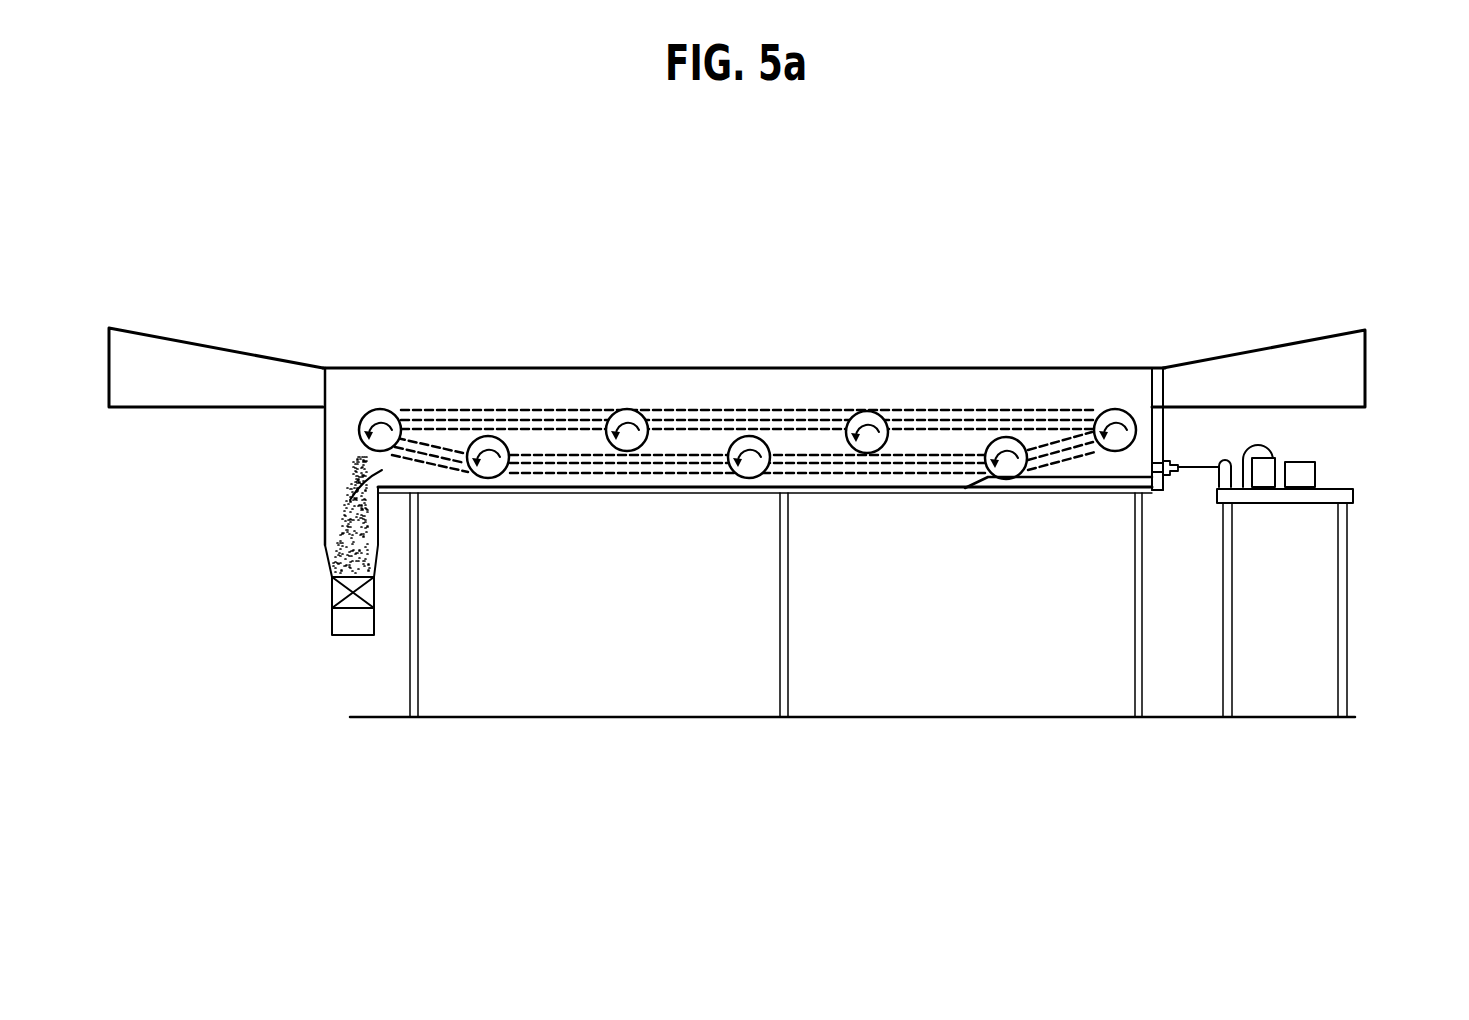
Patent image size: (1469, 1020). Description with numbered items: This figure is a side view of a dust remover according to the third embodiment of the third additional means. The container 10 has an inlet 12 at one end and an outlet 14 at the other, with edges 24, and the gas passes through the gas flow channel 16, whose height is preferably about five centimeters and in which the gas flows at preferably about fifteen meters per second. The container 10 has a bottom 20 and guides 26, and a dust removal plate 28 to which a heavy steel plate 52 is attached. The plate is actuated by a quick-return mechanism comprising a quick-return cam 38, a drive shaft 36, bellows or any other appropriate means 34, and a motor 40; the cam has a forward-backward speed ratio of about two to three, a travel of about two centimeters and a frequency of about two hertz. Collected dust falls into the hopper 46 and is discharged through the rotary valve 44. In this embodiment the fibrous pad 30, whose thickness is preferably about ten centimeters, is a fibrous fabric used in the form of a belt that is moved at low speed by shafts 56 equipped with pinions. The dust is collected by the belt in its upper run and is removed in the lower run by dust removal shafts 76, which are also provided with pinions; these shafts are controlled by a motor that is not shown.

The container 10 is at (630, 352).
The inlet 12 is at (223, 378).
The outlet 14 is at (1342, 358).
The gas flow channel 16 is at (918, 383).
The bottom 20 is at (446, 501).
The edges 24 is at (333, 432).
The guides 26 is at (403, 493).
The dust removal plate 28 is at (882, 495).
The fibrous pad 30 is at (925, 418).
The bellows 34 is at (1170, 472).
The drive shaft 36 is at (1197, 467).
The quick-return cam 38 is at (1273, 457).
The motor 40 is at (1308, 475).
The rotary valve 44 is at (332, 608).
The hopper 46 is at (325, 545).
The heavy steel plate 52 is at (1148, 490).
The shafts 56 is at (885, 470).
The dust removal shafts 76 is at (749, 478).